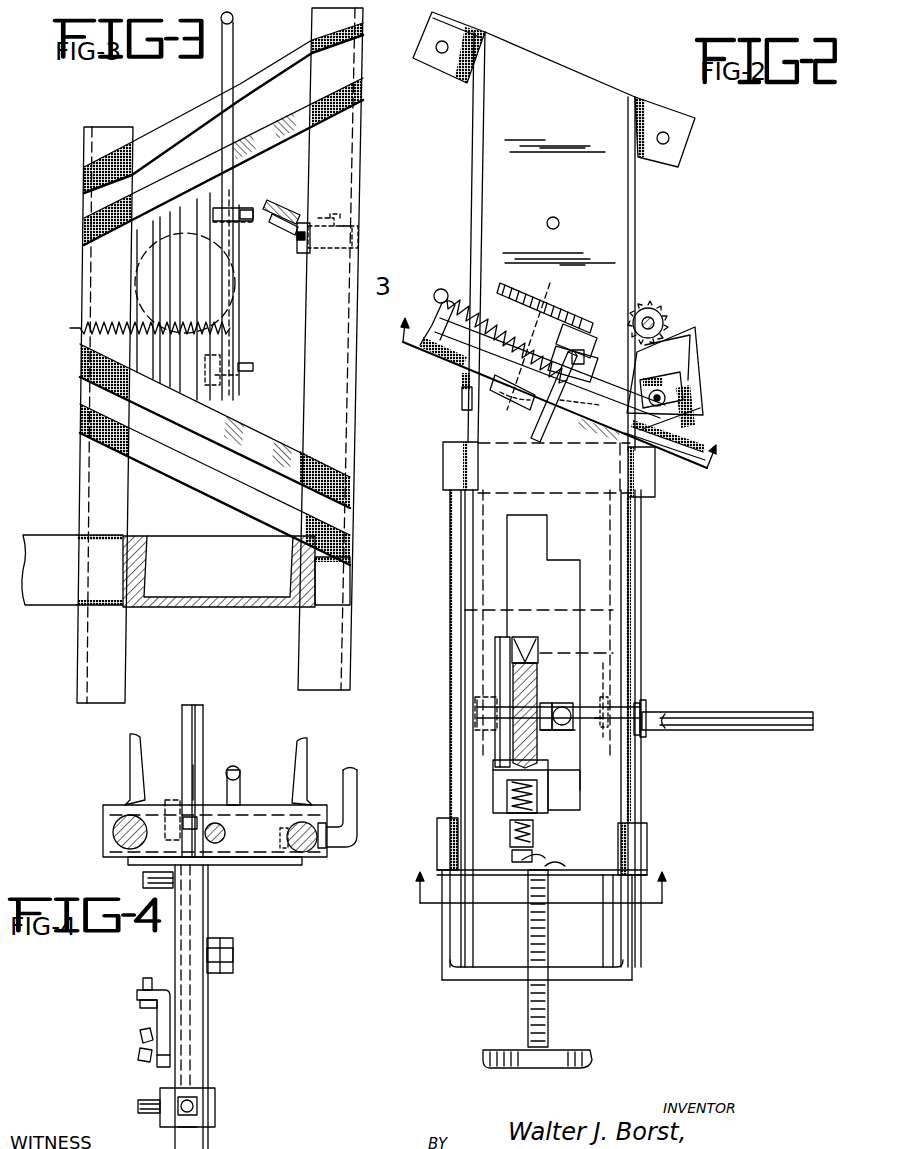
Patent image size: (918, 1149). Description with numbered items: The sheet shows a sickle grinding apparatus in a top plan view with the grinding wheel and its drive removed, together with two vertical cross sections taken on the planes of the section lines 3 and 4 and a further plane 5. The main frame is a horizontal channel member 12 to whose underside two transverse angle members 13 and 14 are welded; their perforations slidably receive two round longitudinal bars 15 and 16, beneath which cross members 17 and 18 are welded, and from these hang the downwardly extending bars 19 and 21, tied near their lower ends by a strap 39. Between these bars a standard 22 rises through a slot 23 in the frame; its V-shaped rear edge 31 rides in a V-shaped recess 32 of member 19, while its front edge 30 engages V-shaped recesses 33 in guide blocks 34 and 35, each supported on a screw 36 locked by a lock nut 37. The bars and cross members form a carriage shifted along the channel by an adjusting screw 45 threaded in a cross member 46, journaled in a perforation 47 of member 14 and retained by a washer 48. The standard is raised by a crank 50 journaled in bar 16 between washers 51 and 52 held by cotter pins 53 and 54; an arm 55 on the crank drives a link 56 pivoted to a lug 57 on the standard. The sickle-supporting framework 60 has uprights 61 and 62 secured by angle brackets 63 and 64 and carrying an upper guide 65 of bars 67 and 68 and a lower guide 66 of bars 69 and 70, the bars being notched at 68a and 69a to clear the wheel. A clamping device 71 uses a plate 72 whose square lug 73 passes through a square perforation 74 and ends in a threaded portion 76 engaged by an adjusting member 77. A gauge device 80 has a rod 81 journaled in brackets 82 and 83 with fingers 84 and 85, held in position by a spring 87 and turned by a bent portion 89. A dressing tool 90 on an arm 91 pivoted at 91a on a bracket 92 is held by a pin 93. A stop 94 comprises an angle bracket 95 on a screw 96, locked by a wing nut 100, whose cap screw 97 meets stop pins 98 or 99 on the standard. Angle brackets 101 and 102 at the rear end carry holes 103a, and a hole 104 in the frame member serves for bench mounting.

In FIG. 2, the section line 3— 3 is at (552, 407).
In FIG. 2, the section line 4— 4 is at (542, 888).
In FIG. 2, the section line 5 is at (540, 283).
In FIG. 3, the channel member 12 is at (213, 612).
In FIG. 2, the channel member 12 is at (640, 258).
In FIG. 4, the channel member 12 is at (137, 774).
In FIG. 2, the angle member 13 is at (445, 448).
In FIG. 2, the angle member 14 is at (637, 848).
In FIG. 4, the angle member 14 is at (108, 818).
In FIG. 2, the longitudinally extending bar 15 is at (450, 928).
In FIG. 4, the longitudinally extending bar 15 is at (115, 835).
In FIG. 2, the longitudinally extending bar 16 is at (625, 942).
In FIG. 4, the longitudinally extending bar 16 is at (305, 855).
In FIG. 2, the cross member 17 is at (565, 635).
In FIG. 2, the cross member 18 is at (565, 805).
In FIG. 4, the cross member 18 is at (258, 860).
In FIG. 2, the bar or supporting member 19 is at (535, 642).
In FIG. 2, the bar or supporting member 21 is at (535, 792).
In FIG. 4, the bar or supporting member 21 is at (206, 1034).
In FIG. 2, the standard 22 is at (537, 689).
In FIG. 4, the standard 22 is at (205, 732).
In FIG. 2, the slot 23 is at (508, 570).
In FIG. 2, the front edge 30 is at (538, 748).
In FIG. 4, the front edge 30 is at (200, 760).
In FIG. 2, the rear edge 31 is at (538, 660).
In FIG. 2, the V-shaped recess 32 is at (520, 660).
In FIG. 2, the V-shaped recess 33 is at (510, 765).
In FIG. 4, the guide block 34 is at (213, 1104).
In FIG. 2, the guide block 35 is at (495, 783).
In FIG. 4, the guide block 35 is at (172, 797).
In FIG. 2, the screw 36 is at (520, 862).
In FIG. 4, the screw 36 is at (197, 1095).
In FIG. 2, the lock nut 37 is at (515, 828).
In FIG. 4, the lock nut 37 is at (195, 1128).
In FIG. 4, the strap 39 is at (165, 1066).
In FIG. 2, the adjusting screw 45 is at (548, 1000).
In FIG. 2, the cross member 46 is at (508, 975).
In FIG. 2, the perforation 47 is at (522, 895).
In FIG. 2, the washer 48 is at (555, 870).
In FIG. 2, the crank 50 is at (678, 709).
In FIG. 4, the crank 50 is at (350, 815).
In FIG. 2, the washer 51 is at (603, 680).
In FIG. 4, the washer 51 is at (285, 820).
In FIG. 2, the washer 52 is at (640, 735).
In FIG. 4, the washer 52 is at (320, 820).
In FIG. 2, the cotter pin 53 is at (600, 732).
In FIG. 2, the cotter pin 54 is at (646, 705).
In FIG. 2, the arm 55 is at (570, 708).
In FIG. 4, the arm 55 is at (240, 785).
In FIG. 2, the link 56 is at (552, 712).
In FIG. 4, the link 56 is at (222, 902).
In FIG. 2, the lug 57 is at (545, 730).
In FIG. 4, the lug 57 is at (233, 952).
In FIG. 3, the framework 60 is at (78, 280).
In FIG. 2, the framework 60 is at (698, 426).
In FIG. 3, the upright 61 is at (97, 487).
In FIG. 2, the upright 61 is at (433, 325).
In FIG. 3, the upright 62 is at (335, 418).
In FIG. 2, the upright 62 is at (690, 405).
In FIG. 3, the angle bracket 63 is at (105, 583).
In FIG. 2, the angle bracket 63 is at (465, 372).
In FIG. 3, the angle bracket 64 is at (333, 586).
In FIG. 2, the angle bracket 64 is at (647, 468).
In FIG. 3, the guide means 65 is at (165, 125).
In FIG. 3, the guide means 66 is at (210, 484).
In FIG. 3, the bar 67 is at (262, 88).
In FIG. 3, the bar 68 is at (302, 128).
In FIG. 3, the notch 68a is at (260, 143).
In FIG. 2, the notch 68a is at (600, 440).
In FIG. 3, the bar 69 is at (185, 398).
In FIG. 3, the notch 69a is at (258, 438).
In FIG. 3, the bar 70 is at (165, 440).
In FIG. 3, the clamping device 71 is at (192, 288).
In FIG. 3, the plate 72 is at (195, 368).
In FIG. 2, the plate 72 is at (520, 410).
In FIG. 2, the lug 73 is at (465, 400).
In FIG. 2, the square perforation 74 is at (515, 390).
In FIG. 3, the screw threaded portion 76 is at (238, 180).
In FIG. 3, the adjusting member 77 is at (222, 258).
In FIG. 2, the adjusting member 77 is at (535, 310).
In FIG. 2, the gauge device 80 is at (589, 348).
In FIG. 3, the rod 81 is at (230, 20).
In FIG. 2, the rod 81 is at (578, 352).
In FIG. 3, the bracket 82 is at (236, 385).
In FIG. 3, the bracket 83 is at (248, 208).
In FIG. 3, the finger 84 is at (250, 222).
In FIG. 2, the finger 84 is at (584, 366).
In FIG. 3, the finger 85 is at (253, 367).
In FIG. 3, the spring 87 is at (118, 320).
In FIG. 2, the spring 87 is at (455, 296).
In FIG. 2, the bent portion 89 is at (570, 415).
In FIG. 3, the dressing tool 90 is at (298, 188).
In FIG. 2, the dressing tool 90 is at (652, 305).
In FIG. 3, the arm 91 is at (292, 226).
In FIG. 2, the arm 91 is at (680, 365).
In FIG. 2, the pivot 91a is at (668, 440).
In FIG. 3, the bracket 92 is at (348, 244).
In FIG. 2, the bracket 92 is at (672, 392).
In FIG. 3, the pin 93 is at (300, 252).
In FIG. 2, the pin 93 is at (670, 352).
In FIG. 4, the stop 94 is at (130, 999).
In FIG. 4, the angle bracket 95 is at (157, 1013).
In FIG. 4, the screw 96 is at (143, 1046).
In FIG. 4, the cap screw 97 is at (148, 983).
In FIG. 4, the stop pin 98 is at (140, 1106).
In FIG. 4, the stop pin 99 is at (143, 883).
In FIG. 4, the wing nut 100 is at (143, 1060).
In FIG. 2, the angle bracket 101 is at (470, 30).
In FIG. 2, the angle bracket 102 is at (657, 112).
In FIG. 2, the hole 103a is at (436, 49).
In FIG. 2, the hole 104 is at (558, 221).